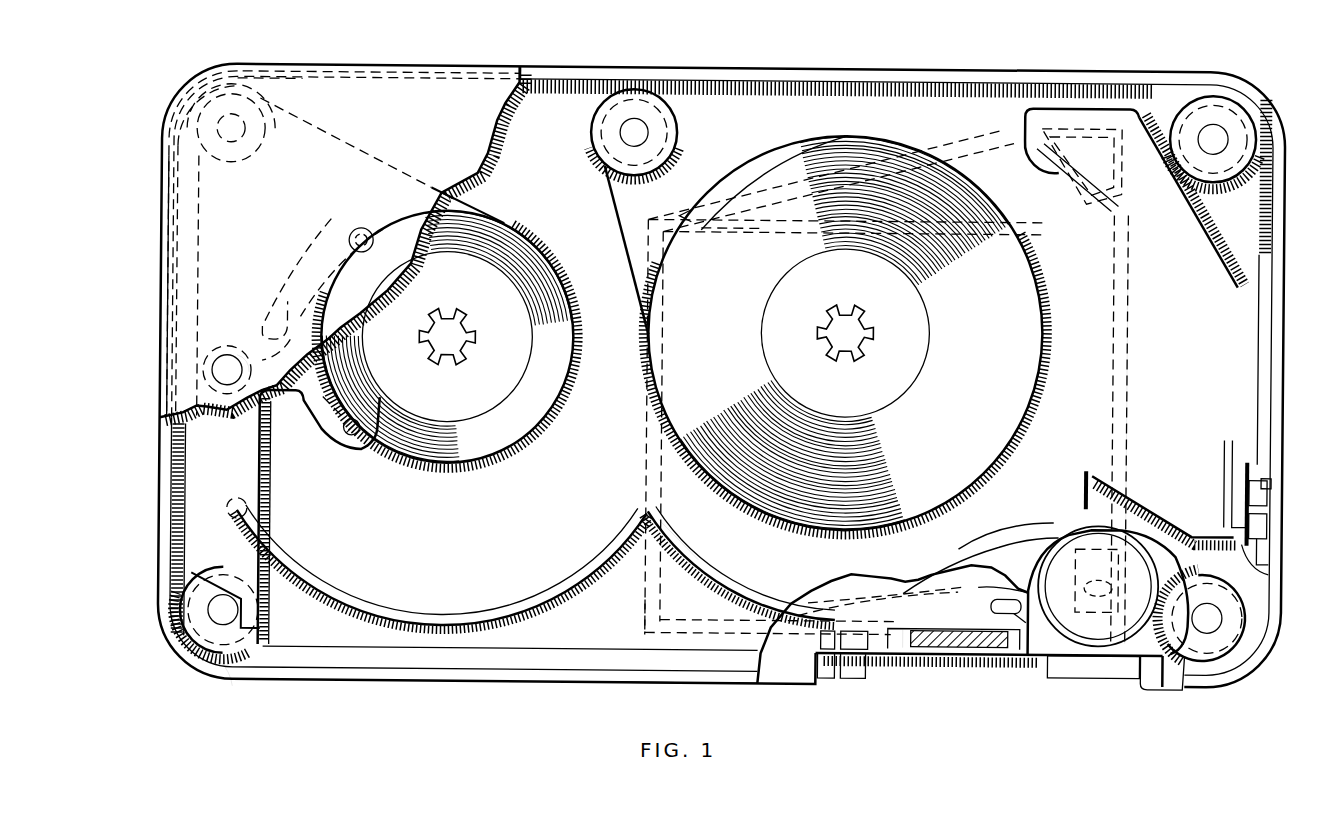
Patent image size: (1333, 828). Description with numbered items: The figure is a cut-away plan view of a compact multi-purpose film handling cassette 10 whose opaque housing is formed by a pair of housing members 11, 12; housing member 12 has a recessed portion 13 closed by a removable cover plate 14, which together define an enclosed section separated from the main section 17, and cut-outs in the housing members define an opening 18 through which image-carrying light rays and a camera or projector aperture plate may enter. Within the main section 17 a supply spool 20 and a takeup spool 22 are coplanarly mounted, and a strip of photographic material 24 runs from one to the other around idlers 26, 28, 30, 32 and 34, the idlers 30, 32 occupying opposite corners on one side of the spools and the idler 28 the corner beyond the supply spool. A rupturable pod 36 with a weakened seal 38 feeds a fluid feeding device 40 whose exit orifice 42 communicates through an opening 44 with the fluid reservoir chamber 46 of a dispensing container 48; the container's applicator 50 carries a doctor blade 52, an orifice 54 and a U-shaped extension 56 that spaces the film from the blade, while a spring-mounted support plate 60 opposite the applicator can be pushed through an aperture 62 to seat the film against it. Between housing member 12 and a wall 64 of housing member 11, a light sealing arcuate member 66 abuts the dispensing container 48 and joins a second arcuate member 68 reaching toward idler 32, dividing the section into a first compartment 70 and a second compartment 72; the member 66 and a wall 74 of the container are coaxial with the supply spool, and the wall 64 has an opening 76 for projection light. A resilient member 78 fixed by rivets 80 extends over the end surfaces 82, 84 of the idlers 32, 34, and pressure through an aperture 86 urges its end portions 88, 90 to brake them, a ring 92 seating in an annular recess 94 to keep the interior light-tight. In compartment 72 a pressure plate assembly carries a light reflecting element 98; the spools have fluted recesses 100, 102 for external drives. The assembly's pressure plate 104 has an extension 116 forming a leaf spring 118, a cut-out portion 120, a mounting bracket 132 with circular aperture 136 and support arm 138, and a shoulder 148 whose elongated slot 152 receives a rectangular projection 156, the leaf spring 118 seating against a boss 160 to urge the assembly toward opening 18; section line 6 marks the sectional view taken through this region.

The section line 6- 6 is at (1048, 505).
The film handling cassette 10 is at (150, 262).
The housing member 11 is at (512, 67).
The housing member 12 is at (590, 670).
The recessed portion 13 is at (1140, 265).
The removable cover plate 14 is at (1100, 678).
The main section 17 is at (545, 100).
The opening 18 is at (818, 680).
The supply spool 20 is at (903, 312).
The takeup spool 22 is at (552, 385).
The strip of photographic material 24 is at (937, 88).
The idler 26 is at (592, 132).
The idler 28 is at (1253, 128).
The idler 30 is at (1212, 683).
The idler 32 is at (244, 652).
The idler 34 is at (175, 95).
The rupturable pod 36 is at (703, 628).
The weakened seal 38 is at (735, 230).
The fluid feeding device 40 is at (788, 205).
The exit orifice 42 is at (1072, 178).
The opening 44 is at (1120, 178).
The fluid reservoir chamber 46 is at (1258, 210).
The dispensing container 48 is at (1188, 352).
The applicator 50 is at (1255, 466).
The doctor blade 52 is at (1270, 513).
The orifice 54 is at (1270, 538).
The U-shaped extension 56 is at (1255, 545).
The support plate 60 is at (1272, 490).
The aperture 62 is at (1272, 478).
The wall 64 is at (458, 87).
The light sealing arcuate member 66 is at (735, 582).
The second light sealing arcuate member 68 is at (548, 580).
The first compartment 70 is at (706, 580).
The second compartment 72 is at (490, 660).
The wall 74 is at (1025, 150).
The opening 76 is at (1027, 537).
The resilient member 78 is at (200, 488).
The rivets 80 is at (365, 236).
The end surface 82 is at (208, 660).
The end surface 84 is at (200, 130).
The aperture 86 is at (215, 359).
The end portion 88 is at (266, 652).
The end portion 90 is at (270, 85).
The ring 92 is at (245, 356).
The annular recess 94 is at (258, 364).
The light reflecting element 98 is at (1147, 572).
The fluted recess 100 is at (873, 340).
The fluted recess 102 is at (468, 336).
The pressure plate 104 is at (878, 658).
The extension 116 is at (783, 655).
The leaf spring 118 is at (948, 585).
The cut-out portion 120 is at (838, 660).
The mounting bracket 132 is at (1152, 676).
The circular aperture 136 is at (1120, 522).
The support arm 138 is at (1128, 496).
The shoulder 148 is at (1018, 650).
The elongated slot 152 is at (984, 648).
The rectangular projection 156 is at (940, 650).
The boss 160 is at (992, 580).